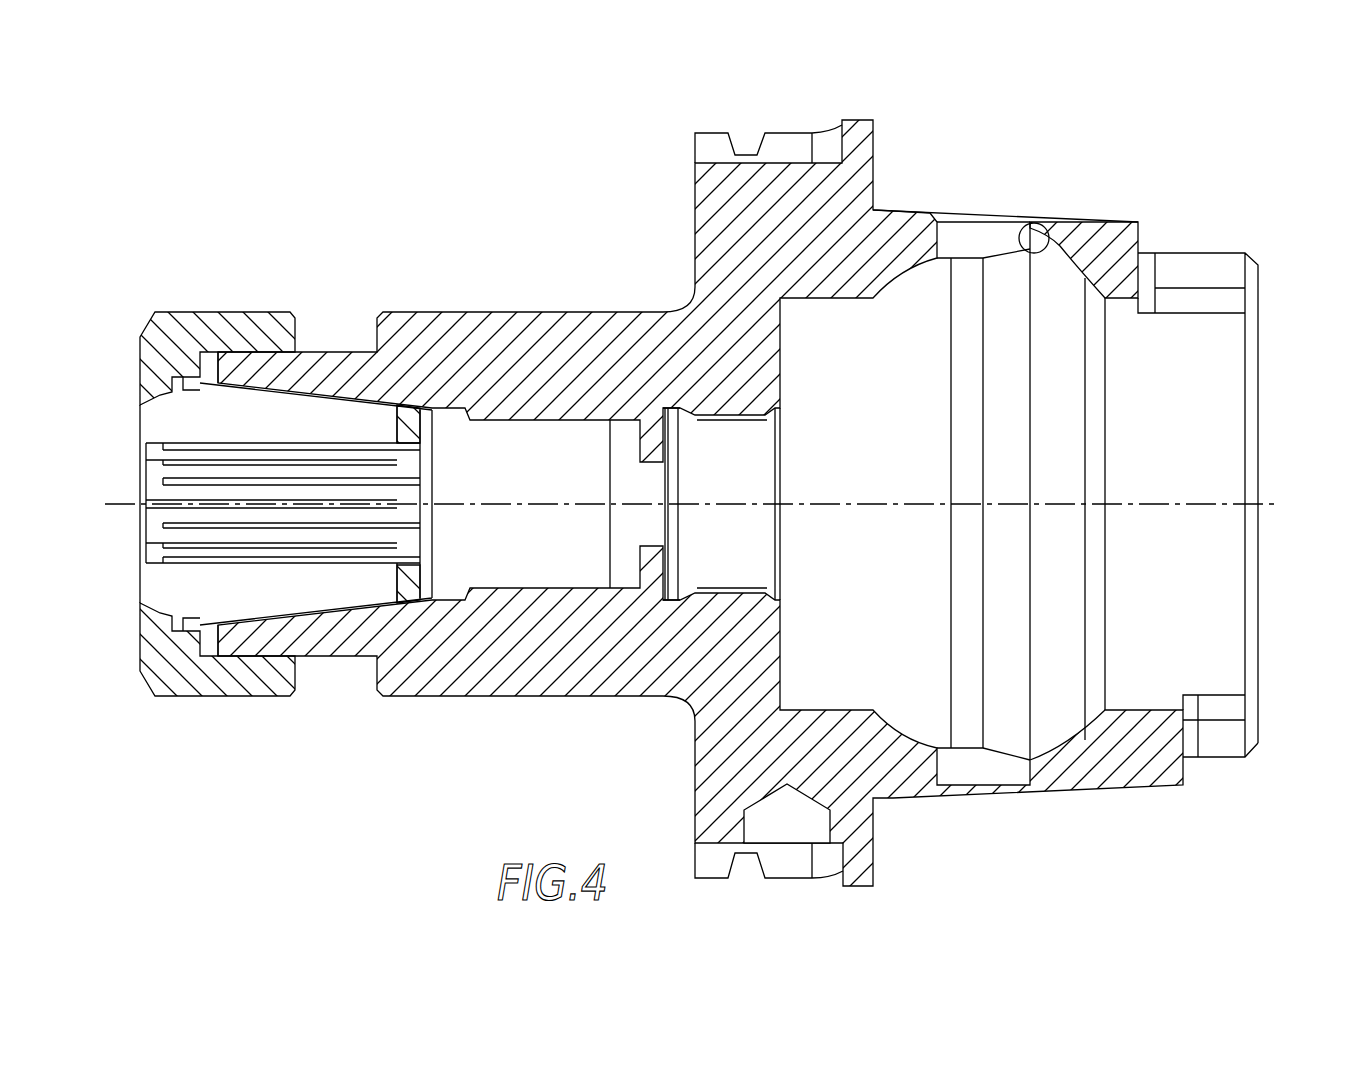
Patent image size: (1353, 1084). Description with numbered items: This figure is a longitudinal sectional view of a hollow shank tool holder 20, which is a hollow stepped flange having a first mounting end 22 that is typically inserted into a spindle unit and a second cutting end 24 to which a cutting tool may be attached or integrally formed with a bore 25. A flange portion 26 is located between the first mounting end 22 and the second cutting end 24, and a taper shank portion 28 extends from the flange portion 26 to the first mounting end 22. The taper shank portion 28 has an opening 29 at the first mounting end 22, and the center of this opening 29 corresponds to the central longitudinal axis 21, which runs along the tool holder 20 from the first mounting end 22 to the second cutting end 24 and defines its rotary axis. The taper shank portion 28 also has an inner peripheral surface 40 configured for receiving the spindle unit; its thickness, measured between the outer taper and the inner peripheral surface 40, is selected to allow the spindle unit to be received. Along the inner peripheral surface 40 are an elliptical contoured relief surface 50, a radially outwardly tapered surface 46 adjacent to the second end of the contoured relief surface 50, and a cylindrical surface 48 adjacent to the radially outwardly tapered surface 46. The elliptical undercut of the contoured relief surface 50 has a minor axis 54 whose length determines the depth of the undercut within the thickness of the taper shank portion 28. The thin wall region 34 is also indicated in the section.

The hollow shank tool holder 20 is at (392, 180).
The central longitudinal axis 21 is at (1265, 502).
The first mounting end 22 is at (1250, 712).
The second cutting end 24 is at (160, 325).
The bore 25 is at (180, 416).
The flange portion 26 is at (712, 190).
The taper shank portion 28 is at (1095, 225).
The opening 29 is at (1250, 314).
The thin wall section 34 is at (1027, 222).
The inner peripheral surface 40 is at (1055, 314).
The radially outwardly tapered surface 46 is at (1004, 258).
The cylindrical surface 48 is at (966, 263).
The elliptical contoured relief surface 50 is at (1068, 262).
The minor axis 54 is at (1038, 246).